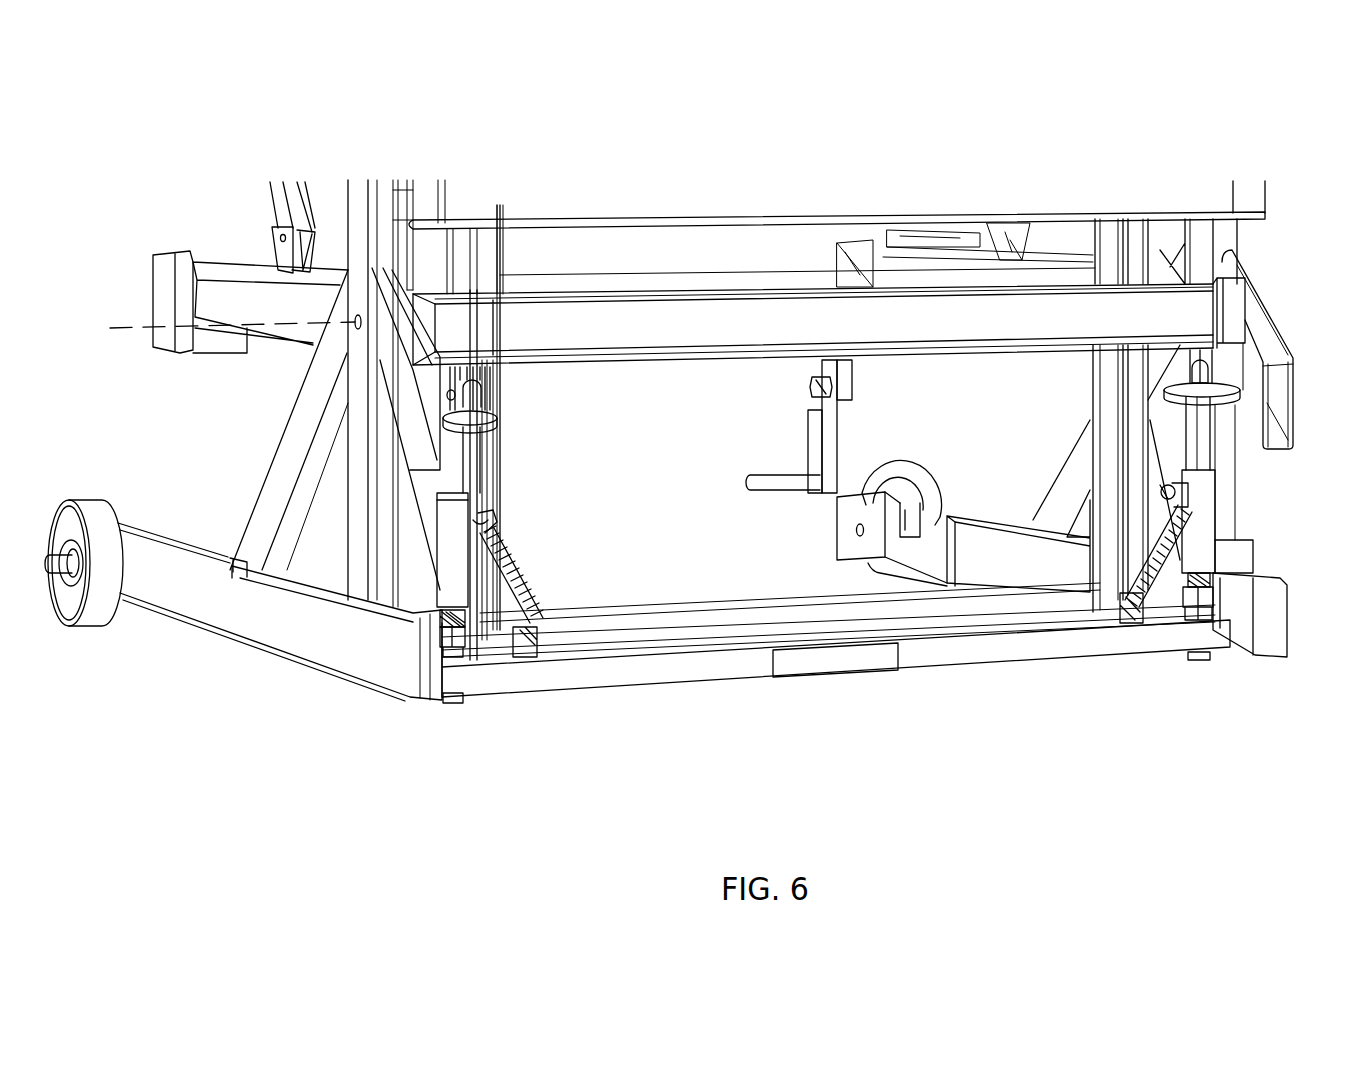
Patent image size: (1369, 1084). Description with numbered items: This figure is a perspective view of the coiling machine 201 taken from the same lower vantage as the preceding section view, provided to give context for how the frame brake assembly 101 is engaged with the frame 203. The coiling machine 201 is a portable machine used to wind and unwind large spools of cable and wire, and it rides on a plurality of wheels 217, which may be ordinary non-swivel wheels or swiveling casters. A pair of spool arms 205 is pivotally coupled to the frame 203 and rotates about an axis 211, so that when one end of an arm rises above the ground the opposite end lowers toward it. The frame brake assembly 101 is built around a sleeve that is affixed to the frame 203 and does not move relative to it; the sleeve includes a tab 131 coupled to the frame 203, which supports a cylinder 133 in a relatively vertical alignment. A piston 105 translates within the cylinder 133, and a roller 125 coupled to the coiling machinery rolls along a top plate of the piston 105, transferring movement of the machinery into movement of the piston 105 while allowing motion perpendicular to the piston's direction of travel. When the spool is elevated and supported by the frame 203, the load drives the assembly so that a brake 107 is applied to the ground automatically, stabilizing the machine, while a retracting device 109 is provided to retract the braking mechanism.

The frame brake assembly 101 is at (587, 722).
The piston 105 is at (457, 462).
The brake 107 is at (820, 667).
The retracting device 109 is at (525, 592).
The roller 125 is at (487, 395).
The tab 131 is at (1255, 542).
The cylinder 133 is at (445, 547).
The coiling machine 201 is at (1143, 128).
The frame 203 is at (319, 633).
The spool arms 205 is at (260, 262).
The axis 211 is at (137, 329).
The wheels 217 is at (103, 624).